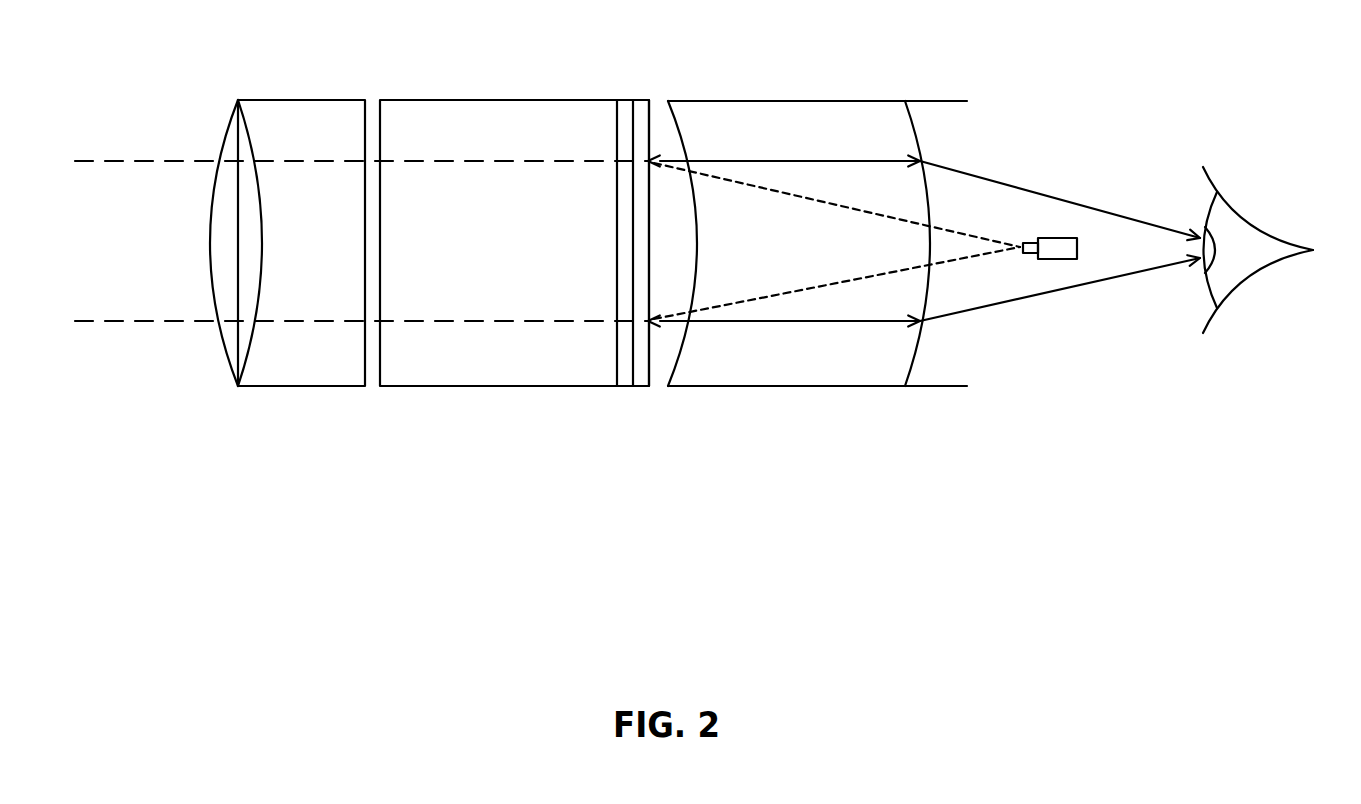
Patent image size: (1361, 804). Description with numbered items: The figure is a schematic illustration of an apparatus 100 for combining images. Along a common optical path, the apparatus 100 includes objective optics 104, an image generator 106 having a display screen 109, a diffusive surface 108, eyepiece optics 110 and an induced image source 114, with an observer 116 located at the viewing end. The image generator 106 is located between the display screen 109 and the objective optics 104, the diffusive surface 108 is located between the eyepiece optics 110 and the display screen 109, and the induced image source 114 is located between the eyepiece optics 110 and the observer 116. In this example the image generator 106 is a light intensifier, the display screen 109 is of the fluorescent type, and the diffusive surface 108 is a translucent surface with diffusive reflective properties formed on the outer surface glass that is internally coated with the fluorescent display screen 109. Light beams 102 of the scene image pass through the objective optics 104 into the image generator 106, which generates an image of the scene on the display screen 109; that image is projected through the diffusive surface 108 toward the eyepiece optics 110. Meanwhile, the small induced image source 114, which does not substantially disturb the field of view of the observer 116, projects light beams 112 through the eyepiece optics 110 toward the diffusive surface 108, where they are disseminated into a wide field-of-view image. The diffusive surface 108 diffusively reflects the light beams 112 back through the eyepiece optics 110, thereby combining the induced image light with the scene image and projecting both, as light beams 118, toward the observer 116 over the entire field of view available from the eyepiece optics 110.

The apparatus 100 is at (393, 513).
The light beams 102 is at (148, 162).
The objective optics 104 is at (300, 388).
The image generator 106 is at (520, 388).
The diffusive surface 108 is at (638, 384).
The display screen 109 is at (627, 100).
The eyepiece optics 110 is at (803, 388).
The light beams 112 is at (948, 230).
The induced image source 114 is at (1060, 237).
The observer 116 is at (1273, 270).
The light beams 118 is at (700, 160).